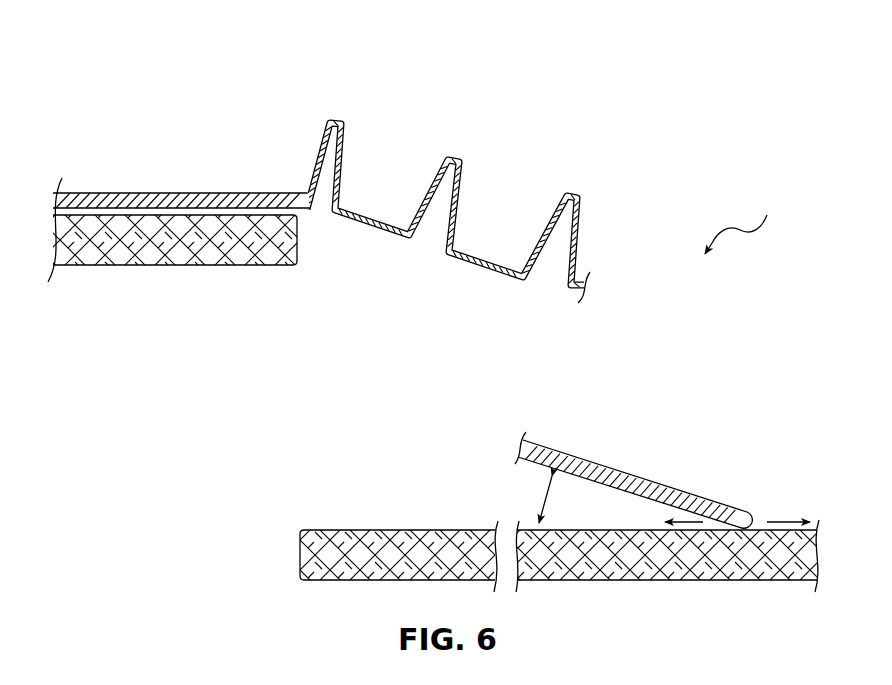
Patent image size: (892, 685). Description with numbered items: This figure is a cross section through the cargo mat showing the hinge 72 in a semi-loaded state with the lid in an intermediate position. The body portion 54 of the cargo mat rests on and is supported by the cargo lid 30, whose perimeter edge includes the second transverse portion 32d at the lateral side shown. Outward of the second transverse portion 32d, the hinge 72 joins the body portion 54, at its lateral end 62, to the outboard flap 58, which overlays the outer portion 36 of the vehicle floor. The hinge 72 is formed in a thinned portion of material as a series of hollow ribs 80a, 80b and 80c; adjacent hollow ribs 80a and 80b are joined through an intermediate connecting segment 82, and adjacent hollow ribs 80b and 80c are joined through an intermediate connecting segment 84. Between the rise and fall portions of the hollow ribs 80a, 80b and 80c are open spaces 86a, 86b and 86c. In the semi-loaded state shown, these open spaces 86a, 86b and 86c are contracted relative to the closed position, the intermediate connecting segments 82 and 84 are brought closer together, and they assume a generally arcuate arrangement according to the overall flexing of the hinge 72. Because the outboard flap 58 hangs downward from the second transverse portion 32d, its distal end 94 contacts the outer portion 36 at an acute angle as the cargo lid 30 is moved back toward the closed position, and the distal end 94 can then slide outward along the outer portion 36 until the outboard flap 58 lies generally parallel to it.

The cargo lid 30 is at (92, 242).
The second transverse portion 32d is at (298, 242).
The outer portion 36 is at (432, 556).
The body portion 54 is at (118, 200).
The outboard flap 58 is at (640, 477).
The lateral end 62 is at (250, 200).
The hinge 72 is at (740, 225).
The hollow rib 80a is at (334, 118).
The hollow rib 80b is at (447, 157).
The hollow rib 80c is at (568, 193).
The intermediate connecting segment 82 is at (365, 215).
The intermediate connecting segment 84 is at (490, 262).
The open space 86a is at (328, 159).
The open space 86b is at (441, 201).
The open space 86c is at (553, 238).
The distal end 94 is at (752, 519).